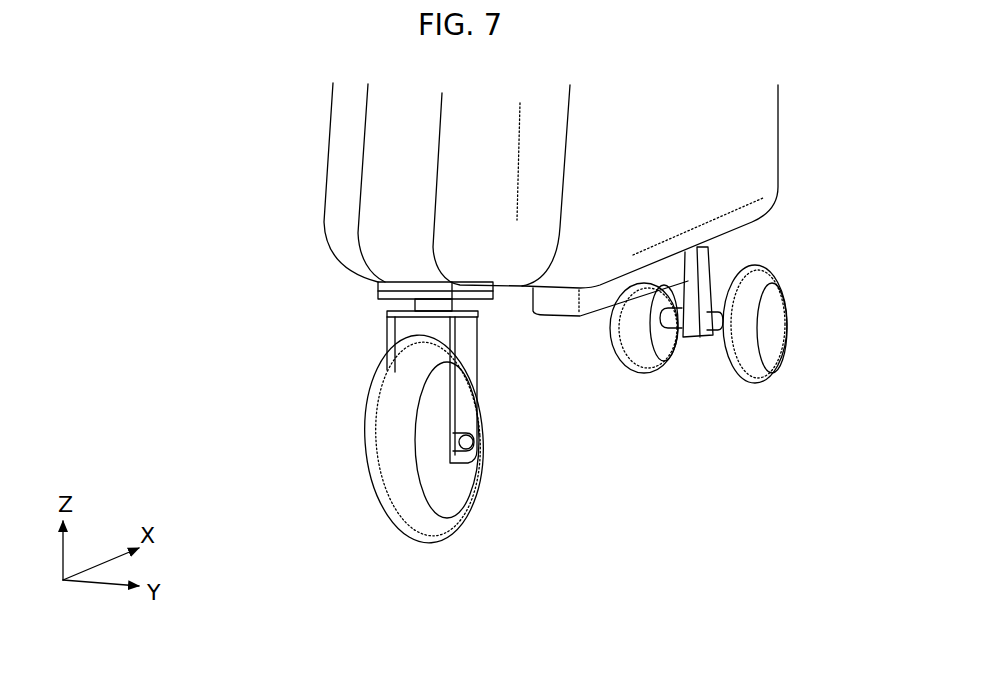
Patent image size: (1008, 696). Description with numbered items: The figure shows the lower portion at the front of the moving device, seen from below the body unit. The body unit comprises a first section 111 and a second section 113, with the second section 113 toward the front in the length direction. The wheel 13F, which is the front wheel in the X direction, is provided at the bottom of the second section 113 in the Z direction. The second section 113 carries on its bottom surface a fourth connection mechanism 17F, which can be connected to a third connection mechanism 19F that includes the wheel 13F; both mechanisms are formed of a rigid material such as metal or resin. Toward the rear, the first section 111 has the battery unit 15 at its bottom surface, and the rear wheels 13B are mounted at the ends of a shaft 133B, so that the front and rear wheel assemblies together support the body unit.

The first section 111 is at (740, 158).
The second section 113 is at (307, 190).
The battery unit 15 is at (567, 328).
The fourth connection mechanism 17F is at (395, 281).
The third connection mechanism 19F is at (375, 332).
The wheel 13F is at (352, 393).
The wheel 13B is at (768, 255).
The shaft 133B is at (692, 345).